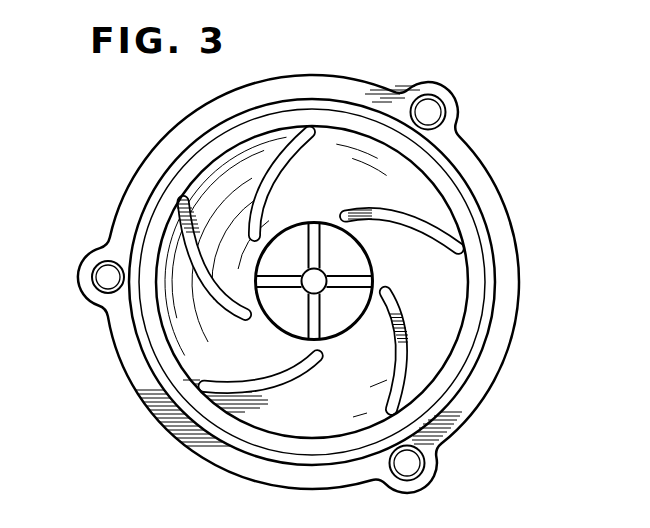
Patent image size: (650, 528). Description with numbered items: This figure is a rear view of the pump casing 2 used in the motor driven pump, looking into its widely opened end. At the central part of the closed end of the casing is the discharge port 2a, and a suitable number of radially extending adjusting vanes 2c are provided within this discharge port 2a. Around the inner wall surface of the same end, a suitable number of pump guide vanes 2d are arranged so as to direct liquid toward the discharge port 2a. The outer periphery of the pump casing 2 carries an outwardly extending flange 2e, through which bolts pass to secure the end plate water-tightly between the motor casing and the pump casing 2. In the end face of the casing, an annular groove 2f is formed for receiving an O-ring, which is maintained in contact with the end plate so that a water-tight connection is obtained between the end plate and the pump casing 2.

The pump casing 2 is at (323, 77).
The discharge port 2a is at (333, 222).
The adjusting vanes 2c is at (321, 289).
The pump guide vanes 2d is at (370, 215).
The outwardly extending flange 2e is at (97, 296).
The annular groove 2f is at (478, 215).